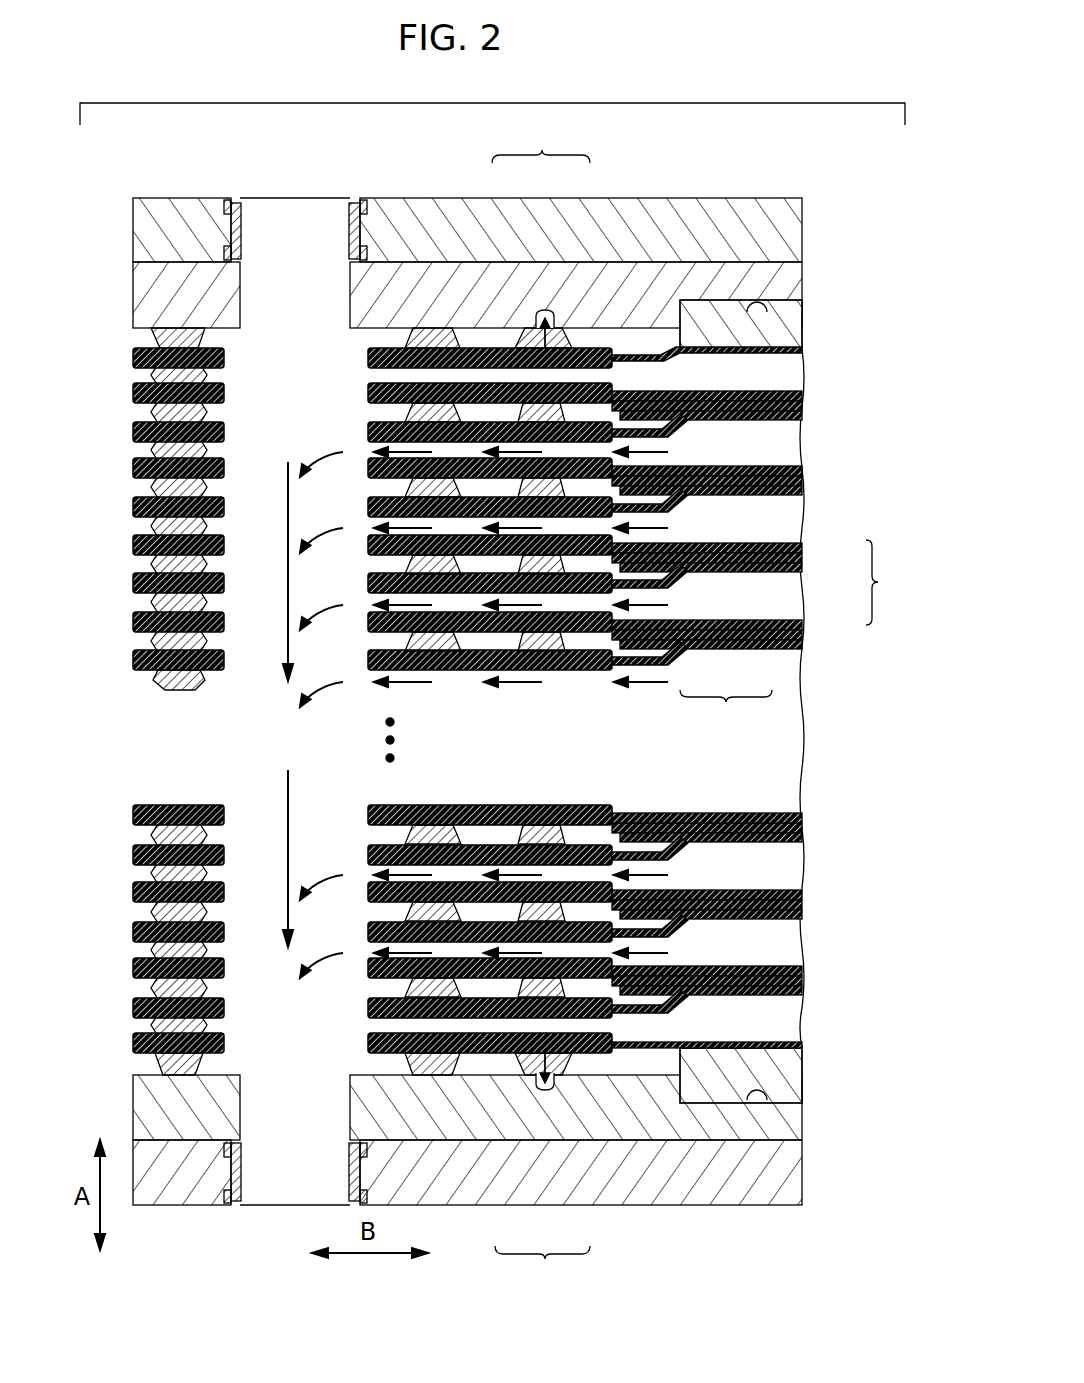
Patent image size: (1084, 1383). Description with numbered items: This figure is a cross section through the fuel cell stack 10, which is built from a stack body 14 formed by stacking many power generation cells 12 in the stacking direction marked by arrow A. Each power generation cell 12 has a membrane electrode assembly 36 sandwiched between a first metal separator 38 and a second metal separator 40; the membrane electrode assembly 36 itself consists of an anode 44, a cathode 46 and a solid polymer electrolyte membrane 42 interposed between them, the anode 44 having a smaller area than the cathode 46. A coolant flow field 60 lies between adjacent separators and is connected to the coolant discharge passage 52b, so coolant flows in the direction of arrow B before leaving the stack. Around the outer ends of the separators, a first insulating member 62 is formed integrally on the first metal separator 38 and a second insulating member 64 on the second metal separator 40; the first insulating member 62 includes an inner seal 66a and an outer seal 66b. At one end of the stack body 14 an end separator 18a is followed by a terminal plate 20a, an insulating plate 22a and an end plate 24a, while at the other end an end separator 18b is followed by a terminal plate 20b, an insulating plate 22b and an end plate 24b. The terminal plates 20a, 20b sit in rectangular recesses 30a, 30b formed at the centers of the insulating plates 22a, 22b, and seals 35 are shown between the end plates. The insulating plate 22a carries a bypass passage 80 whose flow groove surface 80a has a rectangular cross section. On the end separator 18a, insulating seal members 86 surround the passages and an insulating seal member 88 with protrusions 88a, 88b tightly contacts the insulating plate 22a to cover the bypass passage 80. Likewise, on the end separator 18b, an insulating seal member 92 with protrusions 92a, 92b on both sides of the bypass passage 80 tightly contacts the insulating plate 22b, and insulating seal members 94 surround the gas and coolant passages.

The fuel cell stack 10 is at (199, 162).
The power generation cell 12 is at (641, 700).
The stack body 14 is at (890, 582).
The end separator 18a is at (782, 1052).
The end separator 18b is at (782, 343).
The terminal plate 20a is at (702, 1080).
The terminal plate 20b is at (698, 320).
The insulating plate 22a is at (790, 1113).
The insulating plate 22b is at (790, 285).
The end plate 24a is at (790, 1160).
The end plate 24b is at (790, 212).
The rectangular recess 30a is at (756, 1100).
The rectangular recess 30b is at (749, 303).
The seal member 35 is at (240, 223).
The membrane electrode assembly 36 is at (737, 732).
The first metal separator 38 is at (741, 851).
The second metal separator 40 is at (788, 814).
The solid polymer electrolyte membrane 42 is at (735, 650).
The anode 44 is at (699, 650).
The cathode 46 is at (762, 650).
The coolant discharge passage 52b is at (268, 947).
The coolant flow field 60 is at (722, 447).
The first insulating member 62 is at (140, 665).
The second insulating member 64 is at (136, 620).
The inner seal 66a is at (538, 824).
The outer seal 66b is at (438, 824).
The bypass passage 80 is at (562, 344).
The flow groove surface 80a is at (547, 262).
The insulating seal member 86 is at (407, 1063).
The insulating seal member 88 is at (542, 1266).
The protrusion 88a is at (522, 1075).
The protrusion 88b is at (562, 1075).
The insulating seal member 92 is at (541, 146).
The protrusion 92a is at (528, 330).
The protrusion 92b is at (560, 330).
The insulating seal member 94 is at (418, 333).